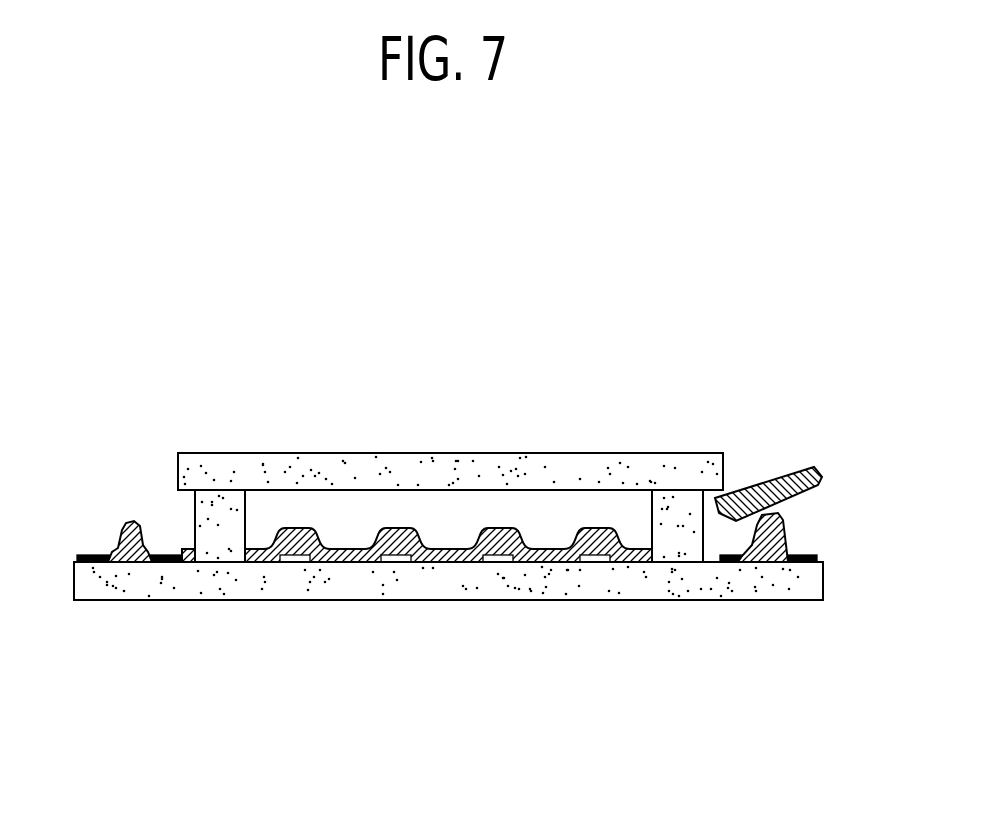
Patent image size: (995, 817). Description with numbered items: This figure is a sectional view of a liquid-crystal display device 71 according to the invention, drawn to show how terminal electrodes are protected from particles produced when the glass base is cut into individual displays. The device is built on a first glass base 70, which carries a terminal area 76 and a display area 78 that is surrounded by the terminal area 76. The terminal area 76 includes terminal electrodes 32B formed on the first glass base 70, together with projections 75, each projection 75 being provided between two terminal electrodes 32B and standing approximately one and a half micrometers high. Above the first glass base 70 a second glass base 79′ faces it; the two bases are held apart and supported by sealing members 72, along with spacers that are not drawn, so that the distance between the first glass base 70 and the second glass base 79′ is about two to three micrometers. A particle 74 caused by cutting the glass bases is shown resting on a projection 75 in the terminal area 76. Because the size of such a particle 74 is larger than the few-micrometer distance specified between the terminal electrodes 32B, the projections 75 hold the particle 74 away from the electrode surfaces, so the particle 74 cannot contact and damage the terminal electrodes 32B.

The liquid-crystal display device 71 is at (138, 240).
The first glass base 70 is at (813, 577).
The sealing member 72 is at (223, 515).
The particle 74 is at (808, 466).
The projection 75 is at (130, 520).
The terminal area 76 is at (192, 613).
The display area 78 is at (653, 611).
The second glass base 79′ is at (407, 468).
The terminal electrode 32B is at (168, 555).